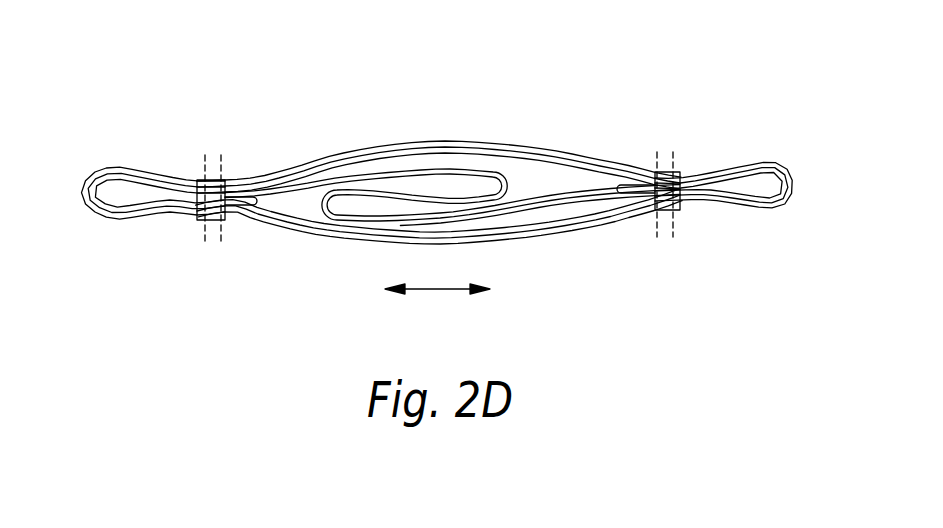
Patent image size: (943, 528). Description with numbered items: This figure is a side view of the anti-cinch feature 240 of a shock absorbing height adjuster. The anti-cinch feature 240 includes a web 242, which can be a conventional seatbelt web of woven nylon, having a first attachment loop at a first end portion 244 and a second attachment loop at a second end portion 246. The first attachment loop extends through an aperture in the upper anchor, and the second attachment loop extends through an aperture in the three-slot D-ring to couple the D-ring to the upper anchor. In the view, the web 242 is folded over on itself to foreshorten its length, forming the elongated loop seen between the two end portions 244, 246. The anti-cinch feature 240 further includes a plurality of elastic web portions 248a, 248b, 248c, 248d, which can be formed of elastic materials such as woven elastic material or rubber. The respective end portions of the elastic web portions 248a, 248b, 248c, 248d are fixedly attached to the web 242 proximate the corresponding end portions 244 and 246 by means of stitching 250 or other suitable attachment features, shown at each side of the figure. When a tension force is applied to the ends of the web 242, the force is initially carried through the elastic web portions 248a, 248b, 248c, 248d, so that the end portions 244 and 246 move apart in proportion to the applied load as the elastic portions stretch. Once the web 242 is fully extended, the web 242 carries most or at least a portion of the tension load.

The anti-cinch feature 240 is at (530, 53).
The web 242 is at (569, 187).
The first end portion 244 is at (763, 162).
The second end portion 246 is at (100, 215).
The elastic web portion 248a is at (363, 147).
The elastic web portion 248b is at (420, 148).
The elastic web portion 248c is at (597, 222).
The elastic web portion 248d is at (533, 243).
The stitching 250 is at (203, 182).